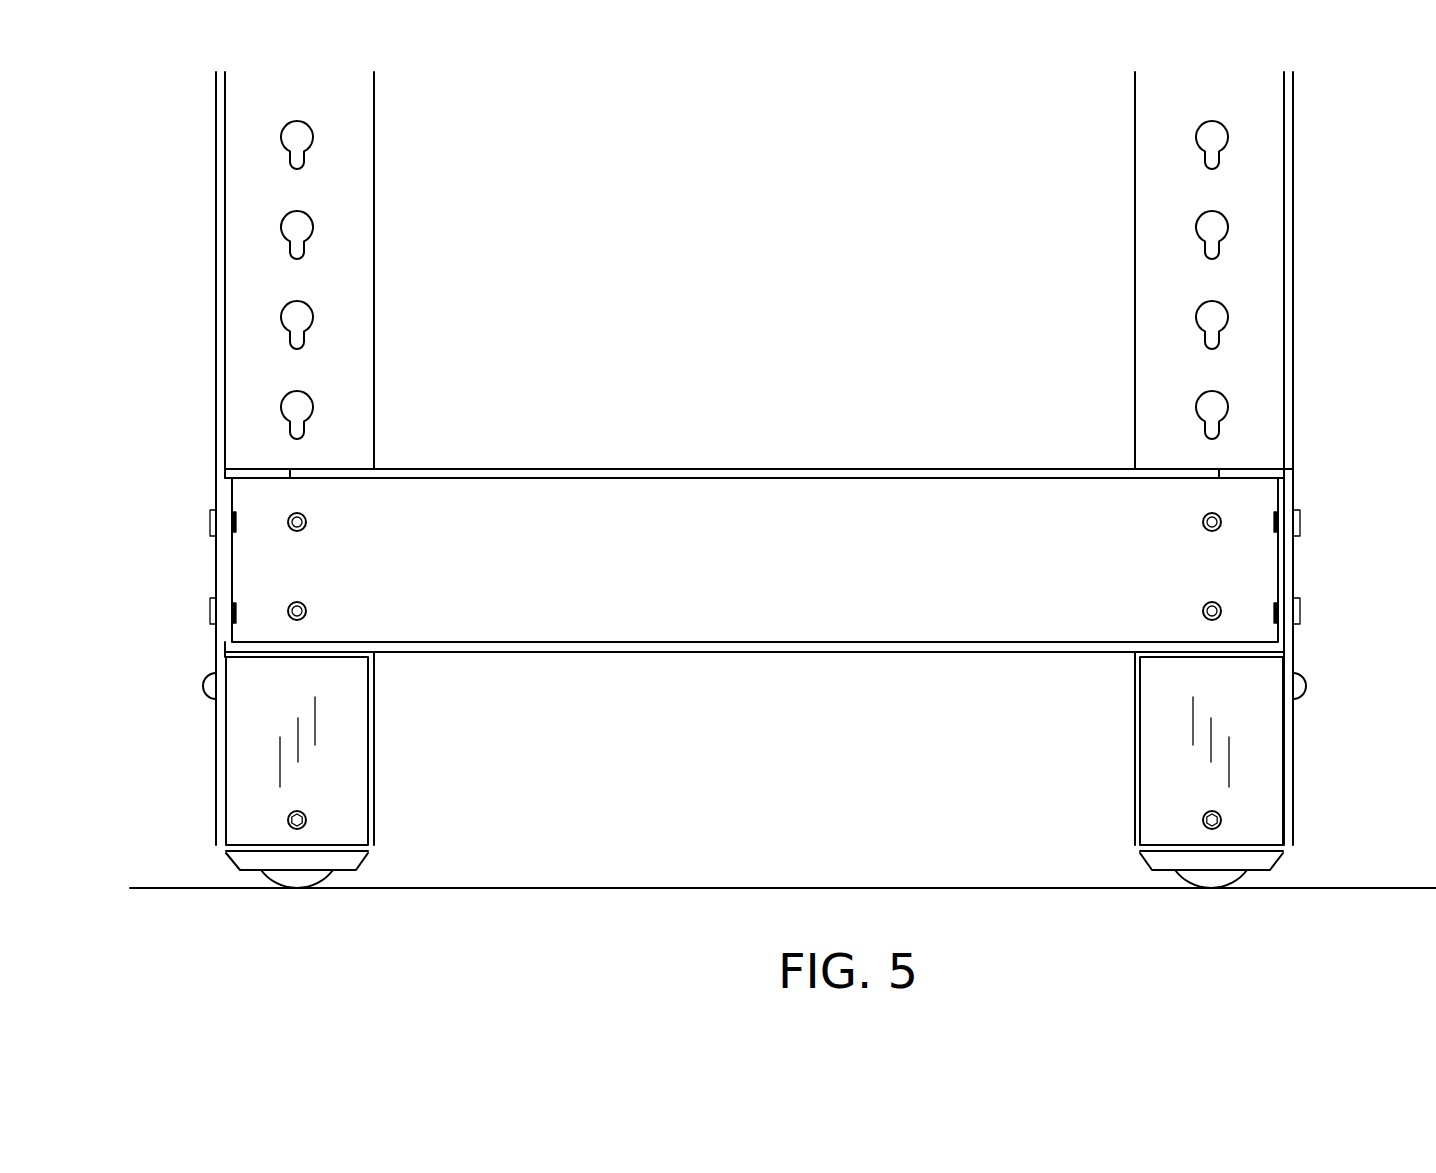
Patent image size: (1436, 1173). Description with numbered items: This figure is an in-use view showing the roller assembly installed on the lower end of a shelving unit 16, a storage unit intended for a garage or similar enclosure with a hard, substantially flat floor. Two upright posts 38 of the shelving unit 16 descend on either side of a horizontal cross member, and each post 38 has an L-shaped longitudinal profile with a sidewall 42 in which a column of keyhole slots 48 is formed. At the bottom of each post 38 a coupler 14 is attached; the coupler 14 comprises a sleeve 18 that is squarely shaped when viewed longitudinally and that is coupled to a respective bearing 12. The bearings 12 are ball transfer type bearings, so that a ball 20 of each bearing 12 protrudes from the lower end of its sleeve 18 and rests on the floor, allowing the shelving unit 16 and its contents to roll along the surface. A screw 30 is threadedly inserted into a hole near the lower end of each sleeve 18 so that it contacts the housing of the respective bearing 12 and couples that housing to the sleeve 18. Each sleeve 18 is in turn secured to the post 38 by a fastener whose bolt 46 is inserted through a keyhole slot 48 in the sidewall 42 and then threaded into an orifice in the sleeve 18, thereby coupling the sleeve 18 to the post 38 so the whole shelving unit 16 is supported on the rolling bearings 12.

The bearing 12 is at (1145, 868).
The coupler 14 is at (340, 745).
The shelving unit 16 is at (374, 280).
The sleeve 18 is at (1248, 757).
The ball 20 is at (1222, 882).
The screw 30 is at (1222, 820).
The post 38 is at (1293, 182).
The sidewall 42 is at (1250, 353).
The bolt 46 is at (1305, 687).
The keyhole slot 48 is at (1212, 318).